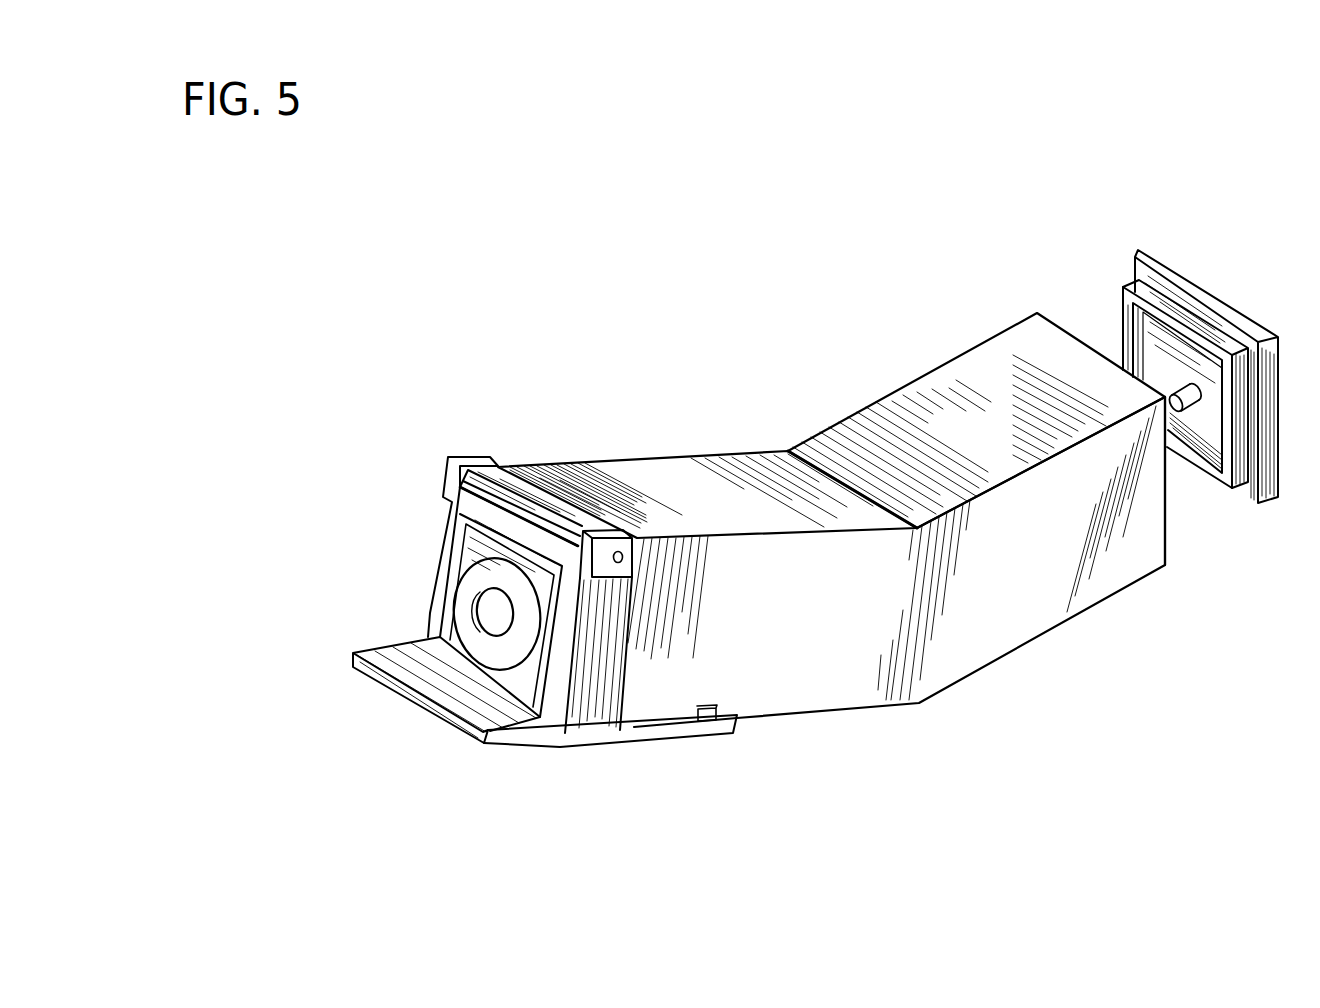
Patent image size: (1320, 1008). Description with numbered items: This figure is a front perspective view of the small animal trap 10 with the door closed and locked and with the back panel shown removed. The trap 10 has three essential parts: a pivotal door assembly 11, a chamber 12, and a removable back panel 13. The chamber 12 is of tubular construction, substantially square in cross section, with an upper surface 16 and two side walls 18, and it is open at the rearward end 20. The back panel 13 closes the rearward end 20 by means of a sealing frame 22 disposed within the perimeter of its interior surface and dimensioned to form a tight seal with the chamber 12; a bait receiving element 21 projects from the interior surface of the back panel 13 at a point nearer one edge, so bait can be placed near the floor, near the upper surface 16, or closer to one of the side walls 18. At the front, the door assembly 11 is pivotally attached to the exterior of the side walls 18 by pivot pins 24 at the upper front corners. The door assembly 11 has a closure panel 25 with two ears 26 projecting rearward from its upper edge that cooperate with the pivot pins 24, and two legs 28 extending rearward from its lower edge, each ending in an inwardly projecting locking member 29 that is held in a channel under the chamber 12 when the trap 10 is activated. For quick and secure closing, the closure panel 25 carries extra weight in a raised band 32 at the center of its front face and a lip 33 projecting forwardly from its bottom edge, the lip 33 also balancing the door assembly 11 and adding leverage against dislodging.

The small animal trap 10 is at (787, 330).
The door assembly 11 is at (325, 528).
The chamber 12 is at (953, 673).
The removable back panel 13 is at (1222, 305).
The upper surface 16 is at (957, 357).
The side walls 18 is at (847, 628).
The rearward end 20 is at (1168, 543).
The bait receiving element 21 is at (1190, 400).
The sealing frame 22 is at (1135, 278).
The pivot pins 24 is at (622, 557).
The closure panel 25 is at (440, 634).
The ears 26 is at (473, 456).
The legs 28 is at (590, 743).
The locking member 29 is at (717, 720).
The raised band 32 is at (470, 597).
The lip 33 is at (480, 703).